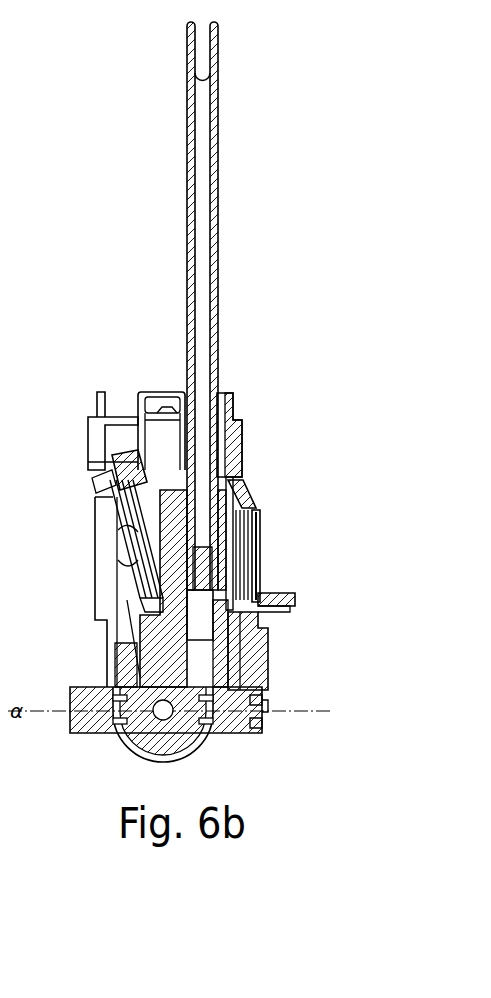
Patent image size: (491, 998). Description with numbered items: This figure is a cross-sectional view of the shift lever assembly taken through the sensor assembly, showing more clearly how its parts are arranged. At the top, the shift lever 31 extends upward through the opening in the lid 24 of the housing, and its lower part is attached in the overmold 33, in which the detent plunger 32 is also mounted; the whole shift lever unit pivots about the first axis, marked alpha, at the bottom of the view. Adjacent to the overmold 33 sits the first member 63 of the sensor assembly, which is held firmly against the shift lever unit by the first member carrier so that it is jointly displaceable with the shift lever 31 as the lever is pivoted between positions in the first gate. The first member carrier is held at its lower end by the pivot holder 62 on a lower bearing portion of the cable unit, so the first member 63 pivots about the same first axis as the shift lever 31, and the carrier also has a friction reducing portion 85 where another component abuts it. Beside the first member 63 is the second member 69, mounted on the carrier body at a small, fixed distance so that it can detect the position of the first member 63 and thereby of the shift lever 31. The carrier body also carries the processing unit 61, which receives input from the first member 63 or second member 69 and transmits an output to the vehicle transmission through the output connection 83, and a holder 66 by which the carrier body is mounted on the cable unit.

The shift lever 31 is at (197, 157).
The lid 24 is at (172, 392).
The detent plunger 32 is at (110, 488).
The overmold 33 is at (170, 523).
The first member 63 is at (253, 507).
The friction reducing portion 85 is at (250, 520).
The second member 69 is at (250, 538).
The processing unit 61 is at (250, 551).
The output connection 83 is at (276, 597).
The pivot holder 62 is at (255, 660).
The holder 66 is at (263, 704).